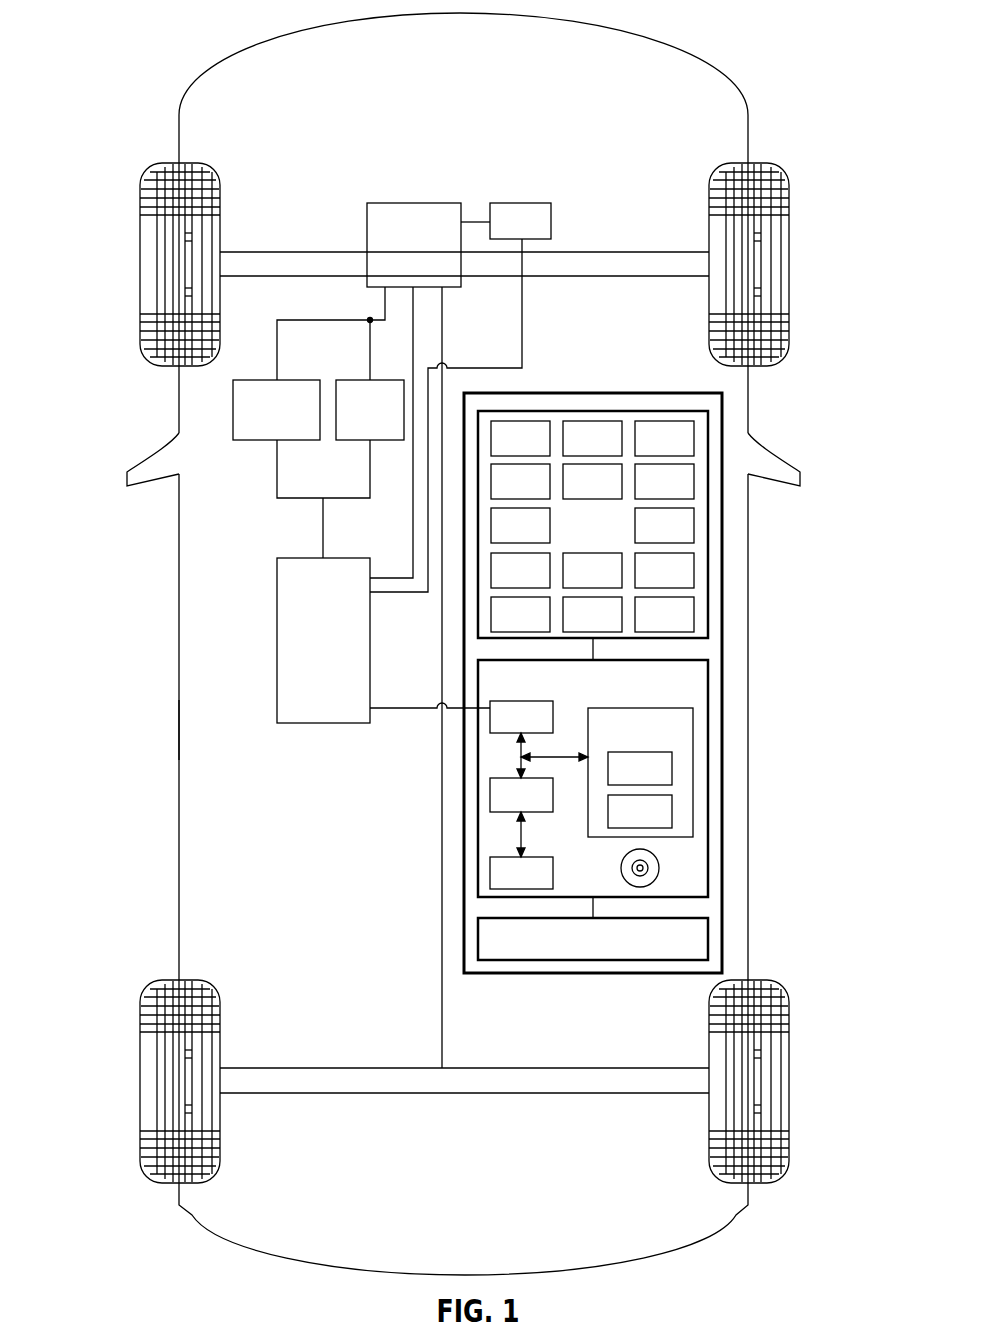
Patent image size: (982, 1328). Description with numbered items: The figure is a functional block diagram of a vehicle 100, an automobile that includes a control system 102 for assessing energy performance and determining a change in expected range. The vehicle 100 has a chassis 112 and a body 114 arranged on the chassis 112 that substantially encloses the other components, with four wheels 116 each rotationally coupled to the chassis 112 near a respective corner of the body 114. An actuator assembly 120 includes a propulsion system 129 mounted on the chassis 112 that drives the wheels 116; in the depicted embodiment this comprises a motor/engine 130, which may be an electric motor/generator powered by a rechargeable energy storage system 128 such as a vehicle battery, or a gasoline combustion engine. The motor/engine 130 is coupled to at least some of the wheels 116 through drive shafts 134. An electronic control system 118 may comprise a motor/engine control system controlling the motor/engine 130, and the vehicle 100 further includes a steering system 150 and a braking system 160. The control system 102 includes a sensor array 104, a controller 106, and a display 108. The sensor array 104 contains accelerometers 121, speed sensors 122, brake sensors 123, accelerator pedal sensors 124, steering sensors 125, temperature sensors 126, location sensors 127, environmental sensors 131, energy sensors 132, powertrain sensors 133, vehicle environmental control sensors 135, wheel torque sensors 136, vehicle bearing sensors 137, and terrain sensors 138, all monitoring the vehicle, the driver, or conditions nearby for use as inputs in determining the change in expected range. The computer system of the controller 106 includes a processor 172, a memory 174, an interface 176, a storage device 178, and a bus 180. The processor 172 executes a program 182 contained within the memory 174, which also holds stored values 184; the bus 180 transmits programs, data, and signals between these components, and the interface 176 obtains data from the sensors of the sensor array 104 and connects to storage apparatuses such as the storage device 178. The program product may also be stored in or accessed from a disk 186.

The vehicle 100 is at (766, 36).
The control system 102 is at (723, 405).
The sensor array 104 is at (709, 480).
The controller 106 is at (709, 673).
The display 108 is at (709, 940).
The chassis 112 is at (432, 1012).
The body 114 is at (178, 727).
The wheels 116 is at (140, 265).
The electronic control system 118 is at (277, 642).
The actuator assembly 120 is at (458, 296).
The accelerometers 121 is at (500, 451).
The speed sensors 122 is at (572, 451).
The brake sensors 123 is at (644, 451).
The accelerator pedal sensors 124 is at (500, 494).
The steering sensors 125 is at (572, 494).
The temperature sensors 126 is at (644, 494).
The location sensors 127 is at (500, 538).
The rechargeable energy storage system 128 is at (500, 235).
The propulsion system 129 is at (406, 229).
The motor/engine 130 is at (393, 245).
The environmental sensors 131 is at (644, 538).
The energy sensors 132 is at (500, 583).
The powertrain sensors 133 is at (572, 583).
The drive shafts 134 is at (282, 251).
The vehicle environmental control sensors 135 is at (644, 583).
The wheel torque sensors 136 is at (500, 627).
The vehicle bearing sensors 137 is at (572, 627).
The terrain sensors 138 is at (644, 627).
The steering system 150 is at (256, 424).
The braking system 160 is at (349, 424).
The processor 172 is at (490, 718).
The memory 174 is at (694, 723).
The interface 176 is at (490, 796).
The storage device 178 is at (490, 874).
The bus 180 is at (518, 752).
The program 182 is at (673, 768).
The stored values 184 is at (673, 812).
The disk 186 is at (660, 868).